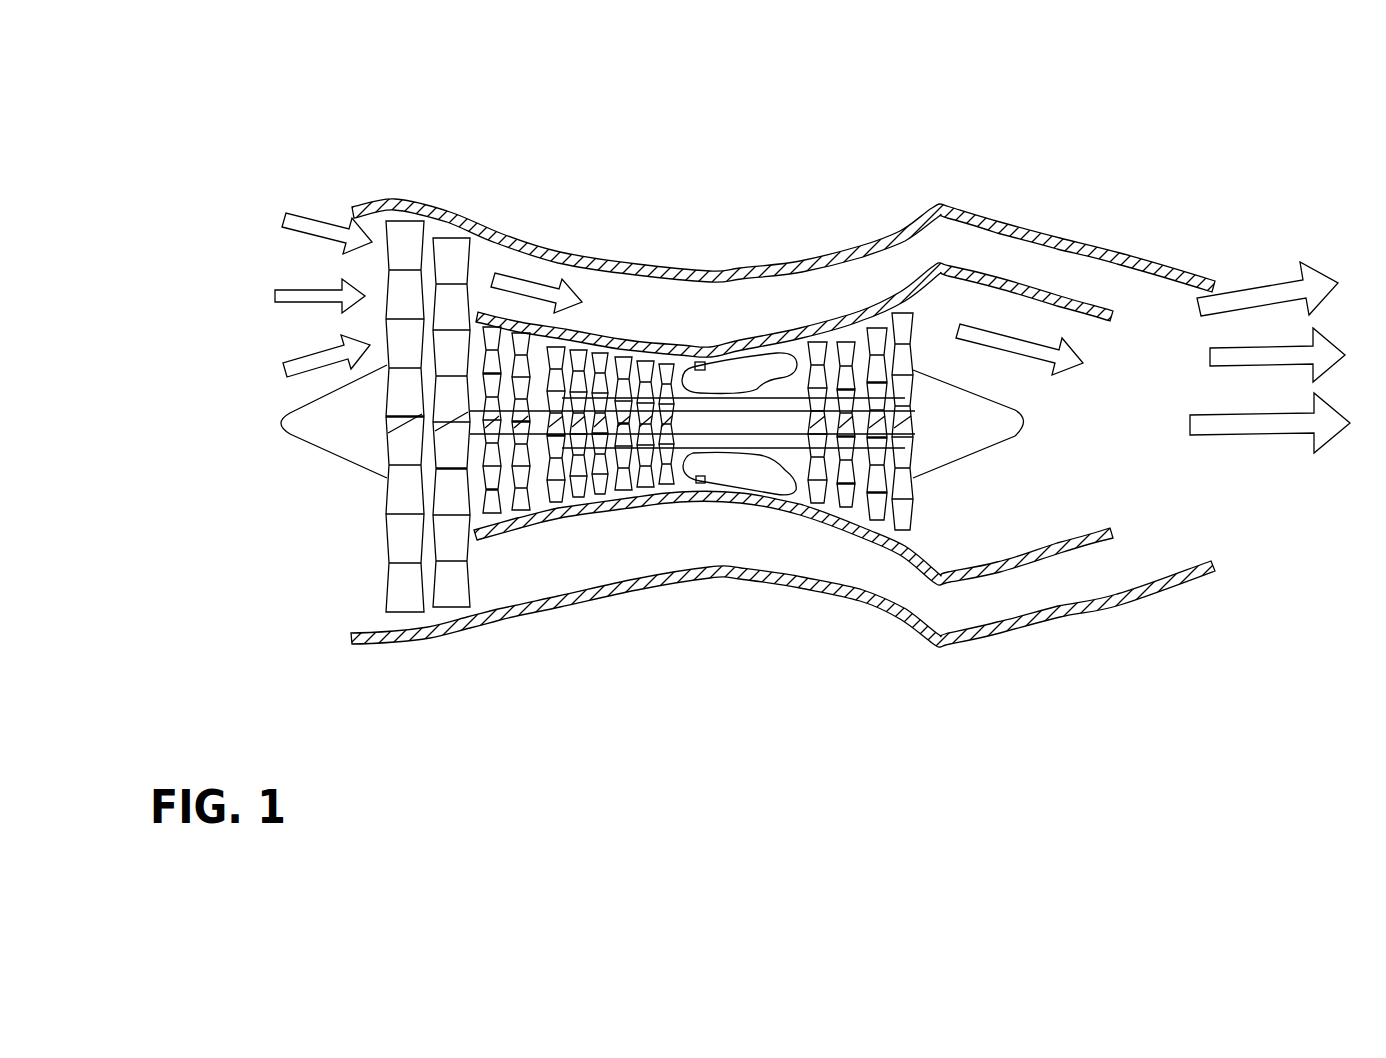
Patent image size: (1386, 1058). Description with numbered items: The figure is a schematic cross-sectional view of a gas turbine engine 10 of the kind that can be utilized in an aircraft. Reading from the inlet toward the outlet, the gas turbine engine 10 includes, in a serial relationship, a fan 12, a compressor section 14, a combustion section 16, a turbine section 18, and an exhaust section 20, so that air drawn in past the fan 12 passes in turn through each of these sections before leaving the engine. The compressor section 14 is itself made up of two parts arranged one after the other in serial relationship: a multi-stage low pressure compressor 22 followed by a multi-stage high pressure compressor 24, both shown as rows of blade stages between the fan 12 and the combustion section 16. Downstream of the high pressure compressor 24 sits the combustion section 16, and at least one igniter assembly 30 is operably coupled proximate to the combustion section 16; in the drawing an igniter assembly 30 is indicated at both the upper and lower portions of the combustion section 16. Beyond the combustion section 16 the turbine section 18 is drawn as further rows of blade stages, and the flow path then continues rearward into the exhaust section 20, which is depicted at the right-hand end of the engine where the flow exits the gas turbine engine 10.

The gas turbine engine 10 is at (363, 122).
The fan 12 is at (400, 596).
The compressor section 14 is at (571, 515).
The combustion section 16 is at (765, 477).
The turbine section 18 is at (845, 500).
The exhaust section 20 is at (1082, 477).
The multi-stage low pressure compressor 22 is at (505, 505).
The multi-stage high pressure compressor 24 is at (617, 488).
The igniter assembly 30 is at (700, 367).